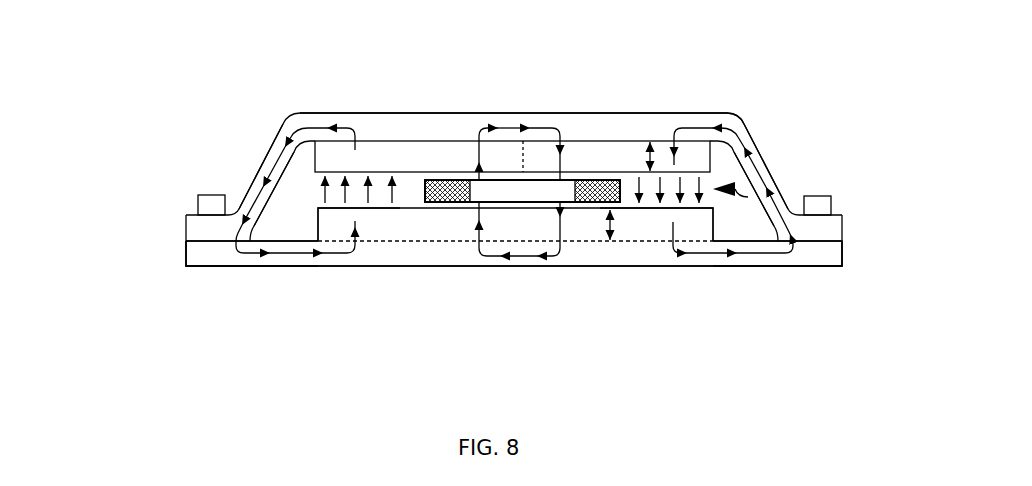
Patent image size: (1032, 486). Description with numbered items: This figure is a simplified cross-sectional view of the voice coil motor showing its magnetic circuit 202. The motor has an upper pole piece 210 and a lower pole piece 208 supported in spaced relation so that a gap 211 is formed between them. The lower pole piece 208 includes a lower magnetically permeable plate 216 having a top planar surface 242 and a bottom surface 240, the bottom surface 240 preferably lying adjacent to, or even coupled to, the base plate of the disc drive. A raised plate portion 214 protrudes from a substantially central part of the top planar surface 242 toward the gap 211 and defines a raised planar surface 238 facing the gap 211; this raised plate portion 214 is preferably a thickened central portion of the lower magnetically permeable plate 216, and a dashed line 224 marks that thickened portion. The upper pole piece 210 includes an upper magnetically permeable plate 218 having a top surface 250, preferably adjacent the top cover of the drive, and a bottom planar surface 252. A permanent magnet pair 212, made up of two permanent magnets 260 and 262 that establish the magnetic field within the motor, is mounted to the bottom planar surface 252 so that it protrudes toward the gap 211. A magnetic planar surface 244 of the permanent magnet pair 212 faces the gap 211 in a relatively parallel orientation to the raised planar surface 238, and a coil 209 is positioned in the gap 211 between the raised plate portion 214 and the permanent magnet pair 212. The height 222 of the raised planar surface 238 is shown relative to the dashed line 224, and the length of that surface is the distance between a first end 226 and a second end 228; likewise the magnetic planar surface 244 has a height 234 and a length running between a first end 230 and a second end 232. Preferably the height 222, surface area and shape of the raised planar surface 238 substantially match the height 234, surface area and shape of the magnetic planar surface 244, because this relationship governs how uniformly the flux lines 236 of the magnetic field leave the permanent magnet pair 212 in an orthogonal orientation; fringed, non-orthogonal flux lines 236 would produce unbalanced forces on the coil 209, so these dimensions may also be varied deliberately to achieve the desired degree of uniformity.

The magnetic circuit 202 is at (830, 293).
The lower pole piece 208 is at (270, 267).
The coil 209 is at (438, 177).
The upper pole piece 210 is at (289, 117).
The gap 211 is at (740, 197).
The permanent magnet pair 212 is at (468, 139).
The raised plate portion 214 is at (392, 212).
The lower magnetically permeable plate 216 is at (185, 252).
The upper magnetically permeable plate 218 is at (185, 228).
The height of the raised planar surface 222 is at (605, 223).
The dashed line 224 is at (650, 212).
The first end of the raised planar surface 226 is at (317, 214).
The second end of the raised planar surface 228 is at (765, 205).
The first end of the magnetic planar surface 230 is at (277, 165).
The second end of the magnetic planar surface 232 is at (755, 147).
The height of the magnetic planar surface 234 is at (660, 157).
The flux lines 236 is at (281, 197).
The raised planar surface 238 is at (641, 204).
The bottom surface 240 is at (743, 267).
The top planar surface 242 is at (282, 232).
The magnetic planar surface 244 is at (380, 177).
The top surface 250 is at (572, 113).
The bottom planar surface 252 is at (730, 152).
The permanent magnet 260 is at (400, 143).
The permanent magnet 262 is at (583, 157).